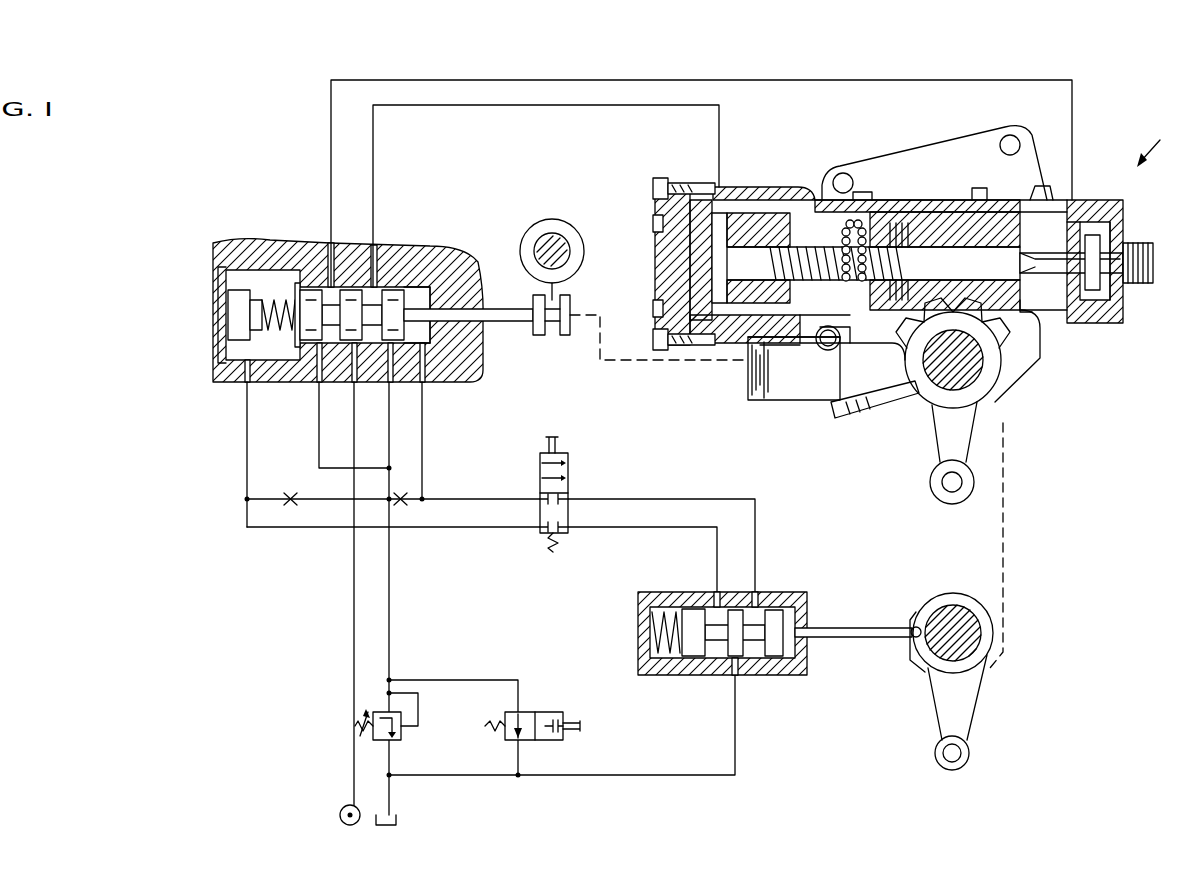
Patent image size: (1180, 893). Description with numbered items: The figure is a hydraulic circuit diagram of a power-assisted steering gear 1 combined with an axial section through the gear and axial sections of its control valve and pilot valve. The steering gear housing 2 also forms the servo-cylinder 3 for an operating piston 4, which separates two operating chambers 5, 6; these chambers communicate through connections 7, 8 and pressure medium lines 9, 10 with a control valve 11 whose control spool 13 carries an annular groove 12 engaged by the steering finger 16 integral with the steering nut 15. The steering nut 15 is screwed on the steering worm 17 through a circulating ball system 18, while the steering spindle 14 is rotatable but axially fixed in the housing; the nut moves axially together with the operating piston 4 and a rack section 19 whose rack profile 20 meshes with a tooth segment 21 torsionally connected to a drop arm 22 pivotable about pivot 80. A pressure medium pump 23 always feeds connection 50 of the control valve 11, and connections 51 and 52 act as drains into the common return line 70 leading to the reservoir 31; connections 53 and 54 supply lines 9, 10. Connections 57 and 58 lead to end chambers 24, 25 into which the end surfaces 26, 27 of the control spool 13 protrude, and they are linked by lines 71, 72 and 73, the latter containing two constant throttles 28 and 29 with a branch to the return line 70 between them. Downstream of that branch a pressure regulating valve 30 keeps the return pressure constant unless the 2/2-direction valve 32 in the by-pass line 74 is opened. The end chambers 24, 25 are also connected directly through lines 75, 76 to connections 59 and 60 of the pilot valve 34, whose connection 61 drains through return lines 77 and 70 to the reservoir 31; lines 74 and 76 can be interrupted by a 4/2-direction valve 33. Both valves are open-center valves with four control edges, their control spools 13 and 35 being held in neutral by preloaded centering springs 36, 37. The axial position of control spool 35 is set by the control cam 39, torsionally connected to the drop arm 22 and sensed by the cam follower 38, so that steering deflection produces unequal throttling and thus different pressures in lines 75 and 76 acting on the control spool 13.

The power-assisted steering gear 1 is at (1154, 141).
The steering gear housing 2 is at (1035, 372).
The servo-cylinder 3 is at (785, 187).
The operating piston 4 is at (760, 213).
The operating chamber 5 is at (724, 210).
The operating chamber 6 is at (1078, 310).
The connection 7 is at (702, 183).
The connection 8 is at (1077, 200).
The pressure medium line 9 is at (467, 107).
The pressure medium line 10 is at (556, 82).
The control valve 11 is at (198, 218).
The annular groove 12 is at (533, 328).
The control spool 13 is at (396, 300).
The steering spindle 14 is at (572, 258).
The steering nut 15 is at (545, 240).
The steering finger 16 is at (572, 306).
The steering worm 17 is at (760, 345).
The circulating ball system 18 is at (856, 225).
The rack section 19 is at (950, 230).
The rack profile 20 is at (1016, 312).
The tooth segment 21 is at (988, 340).
The drop arm 22 is at (976, 690).
The pressure medium pump 23 is at (340, 810).
The end chamber 24 is at (240, 330).
The end chamber 25 is at (430, 335).
The end surface 26 is at (255, 320).
The end surface 27 is at (425, 300).
The constant throttle 28 is at (290, 505).
The constant throttle 29 is at (402, 505).
The pressure regulating valve 30 is at (380, 712).
The reservoir 31 is at (410, 819).
The 2/2-direction valve 32 is at (540, 712).
The 4/2-direction valve 33 is at (568, 468).
The pilot valve 34 is at (786, 686).
The control spool 35 is at (692, 620).
The centering spring 36 is at (652, 630).
The centering spring 37 is at (278, 305).
The cam follower 38 is at (862, 628).
The control cam 39 is at (920, 660).
The connection 50 is at (352, 380).
The connection 51 is at (316, 380).
The connection 52 is at (389, 380).
The connection 53 is at (331, 250).
The connection 54 is at (378, 250).
The connection 57 is at (244, 380).
The connection 58 is at (424, 380).
The connection 59 is at (719, 592).
The connection 60 is at (760, 592).
The connection 61 is at (732, 675).
The return line 70 is at (392, 395).
The line 71 is at (244, 480).
The line 72 is at (424, 462).
The line 73 is at (330, 527).
The by-pass line 74 is at (487, 680).
The line 75 is at (475, 527).
The line 76 is at (497, 499).
The return line 77 is at (656, 775).
The pivot 80 is at (937, 612).